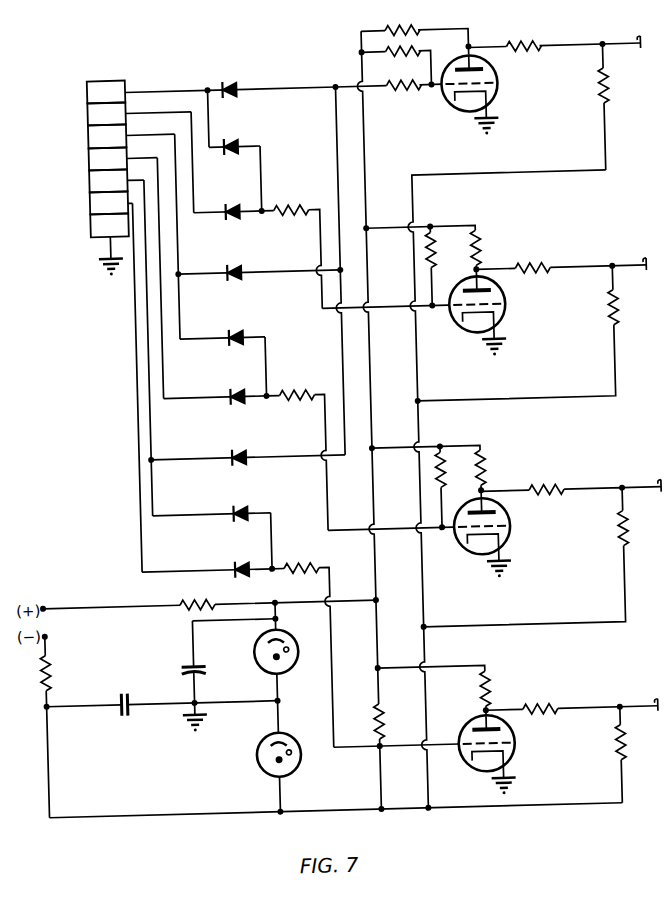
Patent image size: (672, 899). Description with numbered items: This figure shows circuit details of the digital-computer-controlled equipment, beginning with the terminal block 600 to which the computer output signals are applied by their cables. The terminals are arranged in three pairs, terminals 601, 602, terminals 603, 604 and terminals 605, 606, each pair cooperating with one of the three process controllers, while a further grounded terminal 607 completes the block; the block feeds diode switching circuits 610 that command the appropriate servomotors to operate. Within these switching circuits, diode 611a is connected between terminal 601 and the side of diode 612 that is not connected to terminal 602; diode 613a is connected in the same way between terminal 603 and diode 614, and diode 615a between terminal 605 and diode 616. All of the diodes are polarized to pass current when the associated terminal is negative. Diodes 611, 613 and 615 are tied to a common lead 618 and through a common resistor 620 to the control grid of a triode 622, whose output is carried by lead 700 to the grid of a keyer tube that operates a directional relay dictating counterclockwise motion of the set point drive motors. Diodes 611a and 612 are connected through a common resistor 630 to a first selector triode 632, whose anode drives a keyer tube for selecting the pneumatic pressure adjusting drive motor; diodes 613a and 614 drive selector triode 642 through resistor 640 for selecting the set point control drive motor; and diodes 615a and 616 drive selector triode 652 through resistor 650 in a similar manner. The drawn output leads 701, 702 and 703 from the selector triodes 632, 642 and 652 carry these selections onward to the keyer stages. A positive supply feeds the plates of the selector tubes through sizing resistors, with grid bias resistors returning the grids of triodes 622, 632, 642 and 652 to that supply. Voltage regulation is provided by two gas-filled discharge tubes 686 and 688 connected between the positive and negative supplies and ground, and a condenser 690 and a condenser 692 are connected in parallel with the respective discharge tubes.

The terminal block 600 is at (85, 160).
The terminal 601 is at (106, 92).
The terminal 602 is at (106, 114).
The terminal 603 is at (107, 136).
The terminal 604 is at (108, 158).
The terminal 605 is at (108, 180).
The terminal 606 is at (109, 202).
The register stage 607 is at (109, 225).
The diode switching circuits 610 is at (238, 306).
The diode 611 is at (245, 86).
The diode 611a is at (234, 139).
The diode 612 is at (230, 215).
The diode 613 is at (243, 264).
The diode 613a is at (245, 330).
The diode 614 is at (228, 403).
The diode 615 is at (232, 452).
The diode 615a is at (233, 508).
The diode 616 is at (233, 564).
The common lead 618 is at (346, 124).
The common resistor 620 is at (420, 92).
The triode 622 is at (507, 85).
The common resistor 630 is at (311, 212).
The first selector triode 632 is at (504, 300).
The resistor 640 is at (312, 404).
The selector triode 642 is at (508, 530).
The resistor 650 is at (307, 566).
The selector triode 652 is at (506, 746).
The gas-filled discharge tube 686 is at (290, 660).
The gas-filled discharge tube 688 is at (304, 733).
The condenser 690 is at (201, 666).
The condenser 692 is at (114, 692).
The lead 700 is at (624, 44).
The output terminal 701 is at (618, 270).
The output terminal 702 is at (635, 493).
The output terminal 703 is at (629, 714).